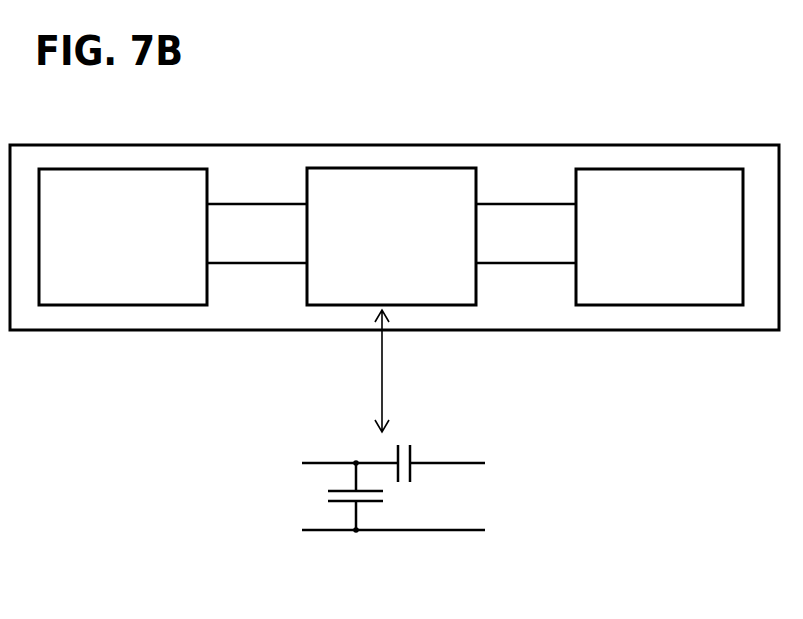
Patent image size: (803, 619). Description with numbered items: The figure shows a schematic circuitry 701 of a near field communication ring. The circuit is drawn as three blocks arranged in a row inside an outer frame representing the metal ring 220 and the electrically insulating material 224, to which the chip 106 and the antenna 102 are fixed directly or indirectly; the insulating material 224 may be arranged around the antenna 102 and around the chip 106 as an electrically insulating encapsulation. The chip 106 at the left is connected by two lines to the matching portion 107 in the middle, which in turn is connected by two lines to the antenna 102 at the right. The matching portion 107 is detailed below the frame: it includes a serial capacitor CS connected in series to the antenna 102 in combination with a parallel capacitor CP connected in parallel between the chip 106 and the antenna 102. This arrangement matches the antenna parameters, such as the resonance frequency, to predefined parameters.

The schematic circuitry 701 is at (690, 96).
The metal ring 220 is at (394, 193).
The electrically insulating material 224 is at (432, 145).
The chip 106 is at (85, 305).
The matching portion 107 is at (457, 305).
The antenna 102 is at (663, 305).
The serial capacitor CS is at (415, 479).
The parallel capacitor CP is at (343, 513).